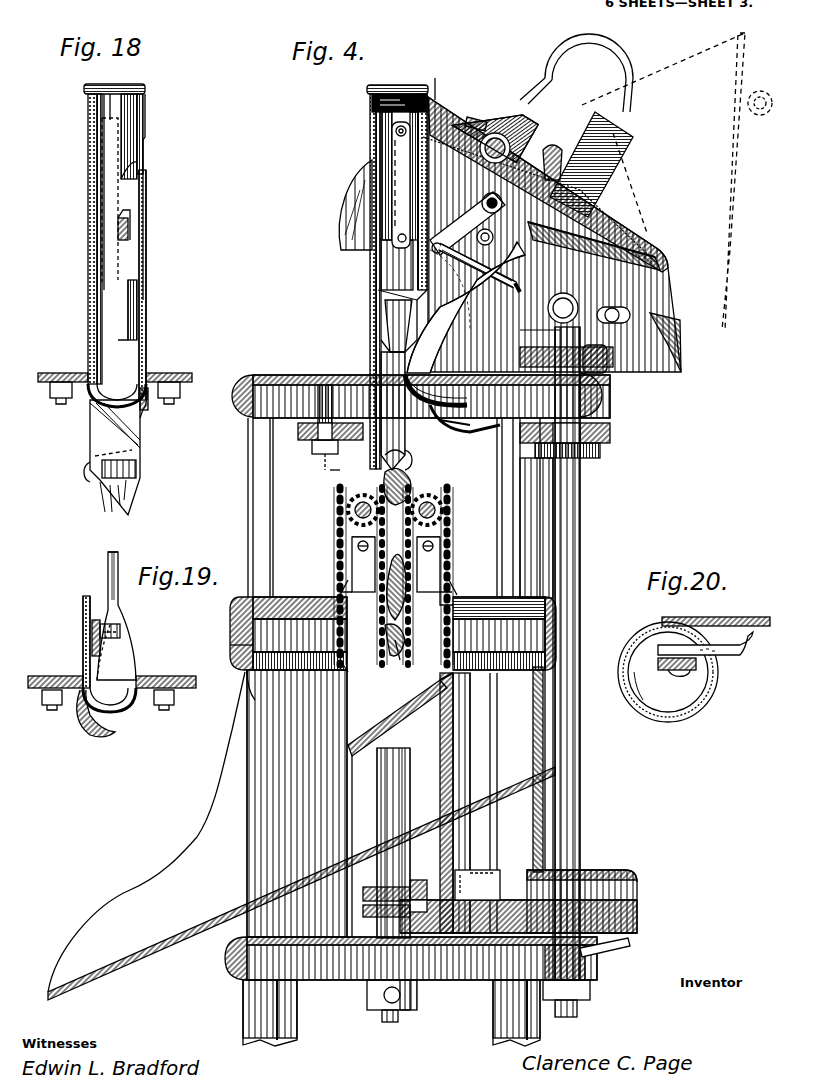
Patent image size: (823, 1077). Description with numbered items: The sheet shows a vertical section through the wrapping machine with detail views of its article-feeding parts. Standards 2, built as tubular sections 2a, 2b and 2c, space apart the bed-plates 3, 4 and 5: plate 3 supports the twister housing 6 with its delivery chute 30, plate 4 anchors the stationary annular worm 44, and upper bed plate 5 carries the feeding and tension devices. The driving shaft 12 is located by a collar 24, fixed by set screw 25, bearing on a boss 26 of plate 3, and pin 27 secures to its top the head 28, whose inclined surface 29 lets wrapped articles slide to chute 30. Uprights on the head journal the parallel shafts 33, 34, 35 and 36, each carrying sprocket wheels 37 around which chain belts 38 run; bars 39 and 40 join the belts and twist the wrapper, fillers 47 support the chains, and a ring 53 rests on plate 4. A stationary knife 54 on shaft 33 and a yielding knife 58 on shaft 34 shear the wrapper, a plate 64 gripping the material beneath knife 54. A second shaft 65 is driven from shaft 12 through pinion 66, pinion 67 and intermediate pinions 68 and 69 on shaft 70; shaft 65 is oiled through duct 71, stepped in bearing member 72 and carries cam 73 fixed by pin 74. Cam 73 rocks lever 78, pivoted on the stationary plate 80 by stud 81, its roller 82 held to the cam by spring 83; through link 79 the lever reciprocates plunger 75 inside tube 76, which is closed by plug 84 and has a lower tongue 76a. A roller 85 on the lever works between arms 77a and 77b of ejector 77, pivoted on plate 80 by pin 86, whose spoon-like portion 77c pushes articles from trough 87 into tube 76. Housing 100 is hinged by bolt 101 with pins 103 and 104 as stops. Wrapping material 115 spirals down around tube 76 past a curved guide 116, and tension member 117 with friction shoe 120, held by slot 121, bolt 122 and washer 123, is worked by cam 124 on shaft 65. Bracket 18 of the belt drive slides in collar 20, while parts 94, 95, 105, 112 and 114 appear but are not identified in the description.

In FIG. 4, the standards 2 is at (402, 1013).
In FIG. 4, the tubular section 2a is at (246, 1020).
In FIG. 4, the tubular section 2b is at (247, 680).
In FIG. 4, the tubular section 2c is at (252, 529).
In FIG. 4, the bed-plate 3 is at (226, 965).
In FIG. 4, the bed-plate 4 is at (233, 650).
In FIG. 18, the bed-plate 5 is at (46, 373).
In FIG. 19, the bed-plate 5 is at (182, 678).
In FIG. 4, the bed-plate 5 is at (245, 375).
In FIG. 4, the twister mechanism housing 6 is at (247, 746).
In FIG. 4, the shaft 12 is at (380, 1022).
In FIG. 4, the standard or bracket 18 is at (410, 452).
In FIG. 4, the collar 20 is at (425, 200).
In FIG. 4, the collar 24 is at (369, 959).
In FIG. 4, the set screw 25 is at (423, 995).
In FIG. 4, the boss 26 is at (362, 975).
In FIG. 4, the pin or key 27 is at (440, 778).
In FIG. 4, the head 28 is at (455, 723).
In FIG. 4, the inclined upper surface 29 is at (397, 808).
In FIG. 4, the delivery chute 30 is at (172, 952).
In FIG. 4, the shaft 33 is at (380, 665).
In FIG. 4, the shaft 34 is at (464, 597).
In FIG. 4, the shaft 35 is at (347, 512).
In FIG. 4, the shaft 36 is at (443, 512).
In FIG. 4, the sprocket wheels 37 is at (352, 534).
In FIG. 4, the chain belts 38 is at (352, 552).
In FIG. 4, the bars 39 is at (342, 576).
In FIG. 4, the bars 40 is at (334, 498).
In FIG. 4, the stationary annular worm member 44 is at (240, 634).
In FIG. 4, the supporting blocks or fillers 47 is at (338, 592).
In FIG. 4, the ring or annulus 53 is at (253, 609).
In FIG. 4, the knife 54 is at (348, 672).
In FIG. 4, the knife 58 is at (405, 665).
In FIG. 4, the plate 64 is at (445, 680).
In FIG. 4, the shaft 65 is at (580, 806).
In FIG. 4, the pinion 66 is at (426, 891).
In FIG. 4, the pinion 67 is at (637, 910).
In FIG. 4, the intermediate pinion 68 is at (426, 909).
In FIG. 4, the intermediate pinion 69 is at (470, 884).
In FIG. 4, the shaft 70 is at (470, 980).
In FIG. 4, the oil duct 71 is at (612, 950).
In FIG. 4, the bearing member 72 is at (578, 1008).
In FIG. 4, the cam 73 is at (612, 378).
In FIG. 4, the pin 74 is at (538, 341).
In FIG. 18, the plunger 75 is at (140, 286).
In FIG. 20, the plunger 75 is at (640, 700).
In FIG. 4, the plunger 75 is at (385, 318).
In FIG. 18, the tube 76 is at (147, 340).
In FIG. 20, the tube 76 is at (685, 712).
In FIG. 4, the tube 76 is at (372, 346).
In FIG. 18, the tongue 76a is at (88, 478).
In FIG. 4, the tongue 76a is at (445, 471).
In FIG. 19, the ejector 77 is at (108, 562).
In FIG. 4, the ejector 77 is at (456, 295).
In FIG. 4, the arm 77a is at (467, 223).
In FIG. 19, the arm 77b is at (129, 547).
In FIG. 4, the arm 77b is at (466, 307).
In FIG. 19, the concavely curved portion 77c is at (130, 660).
In FIG. 4, the concavely curved portion 77c is at (400, 363).
In FIG. 18, the lever 78 is at (140, 223).
In FIG. 19, the lever 78 is at (92, 637).
In FIG. 20, the lever 78 is at (748, 652).
In FIG. 4, the lever 78 is at (550, 302).
In FIG. 18, the link 79 is at (100, 160).
In FIG. 20, the link 79 is at (677, 676).
In FIG. 4, the link 79 is at (392, 149).
In FIG. 19, the stationary plate 80 is at (83, 662).
In FIG. 20, the stationary plate 80 is at (722, 618).
In FIG. 4, the stationary plate 80 is at (670, 270).
In FIG. 4, the pivot pin or stud 81 is at (616, 324).
In FIG. 4, the roller 82 is at (487, 278).
In FIG. 4, the spring 83 is at (636, 250).
In FIG. 18, the threaded plug 84 is at (146, 89).
In FIG. 4, the threaded plug 84 is at (400, 88).
In FIG. 19, the roller 85 is at (118, 628).
In FIG. 4, the roller 85 is at (487, 243).
In FIG. 4, the stud or pin 86 is at (512, 168).
In FIG. 18, the chute or trough 87 is at (118, 398).
In FIG. 19, the chute or trough 87 is at (125, 708).
In FIG. 4, the chute or trough 87 is at (482, 424).
In FIG. 4, the disk 94 is at (592, 388).
In FIG. 4, the block 95 is at (528, 355).
In FIG. 4, the housing 100 is at (596, 232).
In FIG. 4, the bolt 101 is at (668, 330).
In FIG. 4, the pin 103 is at (660, 348).
In FIG. 4, the pin 104 is at (480, 140).
In FIG. 4, the catch 105 is at (561, 156).
In FIG. 4, the handle loop 112 is at (625, 38).
In FIG. 4, the cylinder 114 is at (505, 108).
In FIG. 18, the wrapping material 115 is at (140, 251).
In FIG. 4, the wrapping material 115 is at (345, 236).
In FIG. 18, the curved guide 116 is at (148, 402).
In FIG. 19, the curved guide 116 is at (84, 722).
In FIG. 4, the curved guide 116 is at (465, 425).
In FIG. 4, the reciprocating member 117 is at (478, 116).
In FIG. 4, the friction shoe 120 is at (340, 455).
In FIG. 4, the slot 121 is at (300, 440).
In FIG. 4, the bolt 122 is at (319, 482).
In FIG. 4, the washer 123 is at (330, 448).
In FIG. 4, the cam 124 is at (598, 450).